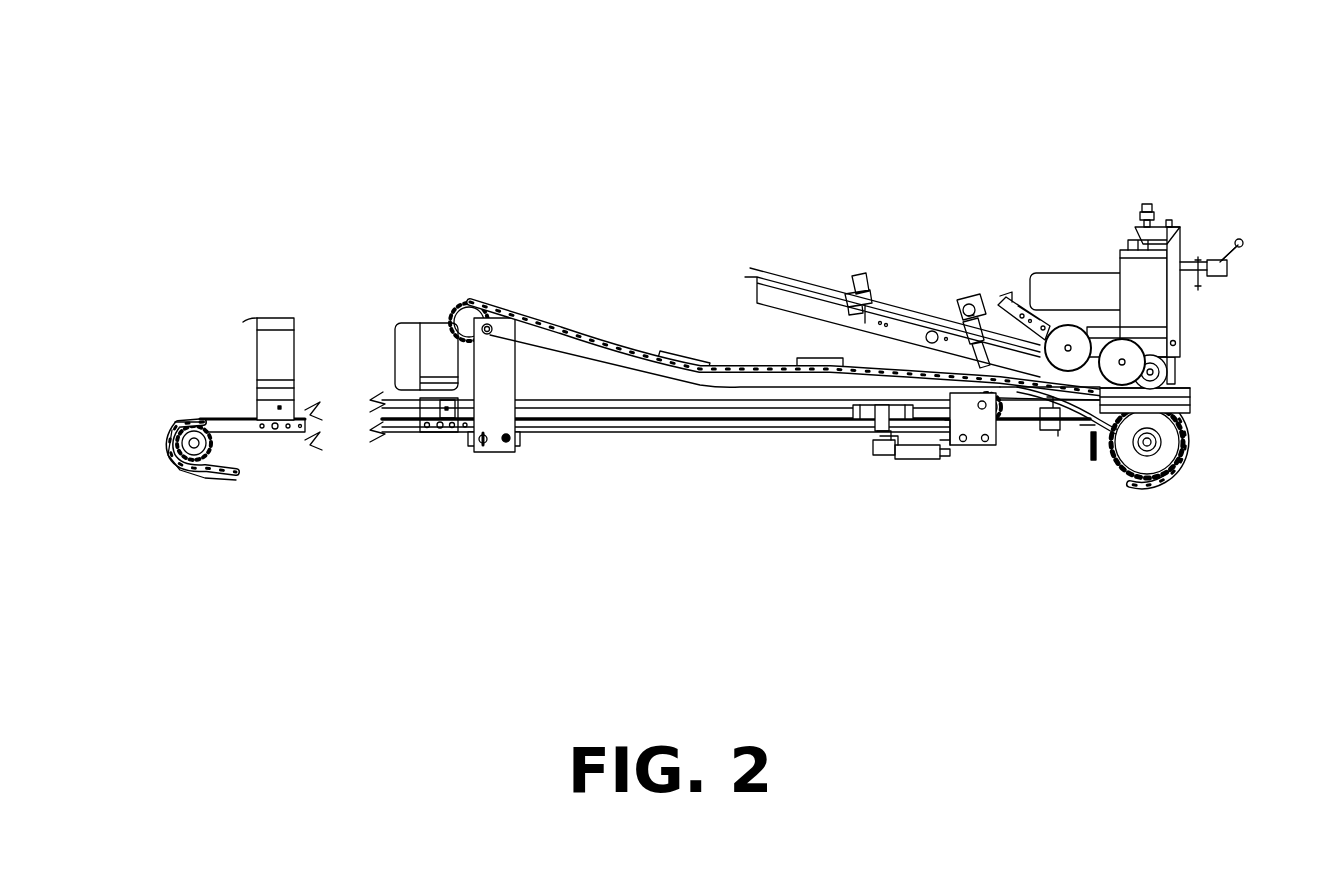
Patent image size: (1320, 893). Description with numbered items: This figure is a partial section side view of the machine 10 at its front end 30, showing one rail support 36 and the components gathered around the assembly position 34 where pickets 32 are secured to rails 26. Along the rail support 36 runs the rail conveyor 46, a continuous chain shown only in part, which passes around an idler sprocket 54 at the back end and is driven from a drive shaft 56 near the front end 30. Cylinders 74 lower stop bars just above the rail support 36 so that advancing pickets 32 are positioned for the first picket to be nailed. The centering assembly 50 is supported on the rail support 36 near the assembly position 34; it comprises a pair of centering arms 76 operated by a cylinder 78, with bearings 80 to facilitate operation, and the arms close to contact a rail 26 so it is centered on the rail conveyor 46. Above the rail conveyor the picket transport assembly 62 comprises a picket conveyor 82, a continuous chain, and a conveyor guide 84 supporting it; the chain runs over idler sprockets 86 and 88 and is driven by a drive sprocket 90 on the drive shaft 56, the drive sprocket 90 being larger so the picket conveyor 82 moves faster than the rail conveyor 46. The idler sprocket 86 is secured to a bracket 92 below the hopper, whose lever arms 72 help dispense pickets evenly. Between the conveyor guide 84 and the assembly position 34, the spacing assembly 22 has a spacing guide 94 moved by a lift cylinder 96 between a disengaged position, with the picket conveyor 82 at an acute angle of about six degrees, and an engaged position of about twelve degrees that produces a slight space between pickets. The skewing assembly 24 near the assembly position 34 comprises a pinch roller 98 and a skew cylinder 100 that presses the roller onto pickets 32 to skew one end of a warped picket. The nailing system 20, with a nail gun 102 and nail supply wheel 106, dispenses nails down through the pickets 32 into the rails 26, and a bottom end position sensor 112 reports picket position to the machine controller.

The machine 10 is at (405, 145).
The nailing system 20 is at (1145, 278).
The spacing assembly 22 is at (1108, 466).
The skewing assembly 24 is at (1006, 300).
The rails 26 is at (1190, 405).
The front end 30 is at (1145, 225).
The pickets 32 is at (1185, 398).
The assembly position 34 is at (1180, 388).
The rail support 36 is at (1074, 482).
The rail conveyor 46 is at (634, 421).
The centering assembly 50 is at (875, 496).
The idler sprocket 54 is at (218, 453).
The drive shaft 56 is at (1152, 442).
The picket transport assembly 62 is at (871, 371).
The lever arms 72 is at (1177, 372).
The cylinders 74 is at (1172, 222).
The centering arms 76 is at (867, 410).
The cylinder 78 is at (920, 456).
The bearings 80 is at (878, 432).
The picket conveyor 82 is at (542, 318).
The conveyor guide 84 is at (871, 371).
The idler sprocket 86 is at (469, 310).
The idler sprocket 88 is at (1003, 420).
The drive sprocket 90 is at (1196, 448).
The bracket 92 is at (484, 399).
The spacing guide 94 is at (1097, 415).
The lift cylinder 96 is at (1093, 462).
The pinch roller 98 is at (1123, 360).
The skew cylinder 100 is at (970, 300).
The nail gun 102 is at (1154, 308).
The nail supply wheel 106 is at (804, 275).
The bottom end position sensor 112 is at (1175, 343).